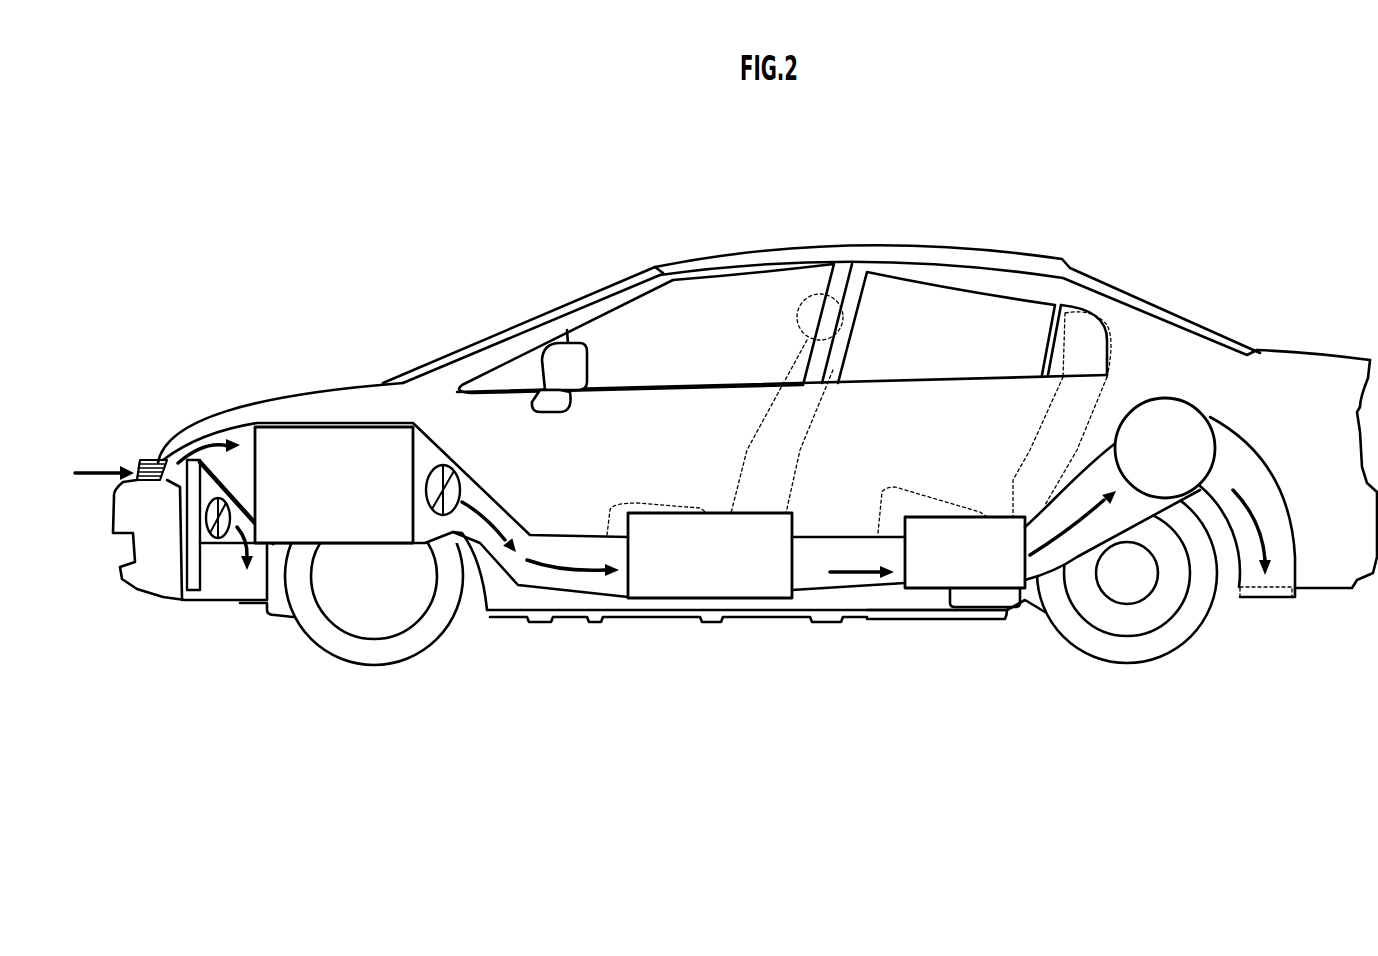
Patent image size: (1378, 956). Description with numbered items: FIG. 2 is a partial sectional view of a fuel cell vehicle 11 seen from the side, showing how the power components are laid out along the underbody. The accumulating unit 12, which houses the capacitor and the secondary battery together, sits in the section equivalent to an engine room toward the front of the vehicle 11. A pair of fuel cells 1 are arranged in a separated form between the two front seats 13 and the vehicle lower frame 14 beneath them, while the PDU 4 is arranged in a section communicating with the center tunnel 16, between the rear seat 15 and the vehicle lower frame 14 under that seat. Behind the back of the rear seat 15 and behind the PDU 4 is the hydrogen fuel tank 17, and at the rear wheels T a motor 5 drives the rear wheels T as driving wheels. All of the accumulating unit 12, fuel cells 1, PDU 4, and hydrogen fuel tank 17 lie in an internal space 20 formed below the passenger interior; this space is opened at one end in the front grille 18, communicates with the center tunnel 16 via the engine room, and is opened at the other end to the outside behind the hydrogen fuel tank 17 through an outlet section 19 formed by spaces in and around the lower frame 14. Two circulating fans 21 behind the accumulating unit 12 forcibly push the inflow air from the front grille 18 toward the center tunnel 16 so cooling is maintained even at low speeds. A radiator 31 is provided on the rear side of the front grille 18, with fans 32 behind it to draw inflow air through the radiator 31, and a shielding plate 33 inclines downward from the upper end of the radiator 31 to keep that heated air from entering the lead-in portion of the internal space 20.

The fuel cell 1 is at (650, 578).
The PDU 4 is at (950, 577).
The motor 5 is at (1160, 570).
The vehicle 11 is at (413, 320).
The accumulating unit 12 is at (270, 433).
The front seat 13 is at (804, 300).
The vehicle lower frame 14 is at (878, 603).
The rear seat 15 is at (1064, 312).
The center tunnel 16 is at (817, 573).
The hydrogen fuel tank 17 is at (1210, 420).
The front grille 18 is at (140, 462).
The outlet section 19 is at (1268, 590).
The internal space 20 is at (547, 580).
The circulating fan 21 is at (430, 470).
The radiator 31 is at (193, 582).
The fan 32 is at (232, 533).
The shielding plate 33 is at (233, 493).
The rear wheel T is at (1042, 613).